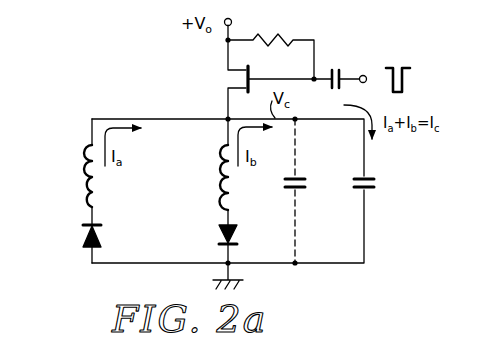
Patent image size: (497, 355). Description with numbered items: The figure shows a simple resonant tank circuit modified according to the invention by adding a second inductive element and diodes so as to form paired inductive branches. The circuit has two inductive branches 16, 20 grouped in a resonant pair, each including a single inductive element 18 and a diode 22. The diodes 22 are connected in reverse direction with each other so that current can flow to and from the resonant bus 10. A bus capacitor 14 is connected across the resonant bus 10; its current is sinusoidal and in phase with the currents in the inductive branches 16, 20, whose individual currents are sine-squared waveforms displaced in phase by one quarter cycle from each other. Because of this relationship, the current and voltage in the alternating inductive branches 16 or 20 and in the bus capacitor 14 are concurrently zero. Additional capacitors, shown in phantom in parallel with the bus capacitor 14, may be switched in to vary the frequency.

The resonant bus 10 is at (106, 119).
The bus capacitor 14 is at (367, 189).
The inductive branch 16 is at (70, 128).
The inductive element 18 is at (80, 190).
The inductive branch 20 is at (200, 143).
The diode 22 is at (82, 224).